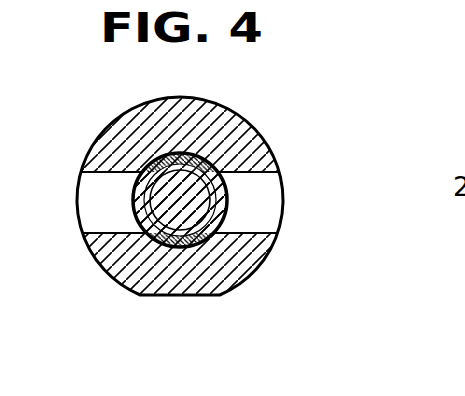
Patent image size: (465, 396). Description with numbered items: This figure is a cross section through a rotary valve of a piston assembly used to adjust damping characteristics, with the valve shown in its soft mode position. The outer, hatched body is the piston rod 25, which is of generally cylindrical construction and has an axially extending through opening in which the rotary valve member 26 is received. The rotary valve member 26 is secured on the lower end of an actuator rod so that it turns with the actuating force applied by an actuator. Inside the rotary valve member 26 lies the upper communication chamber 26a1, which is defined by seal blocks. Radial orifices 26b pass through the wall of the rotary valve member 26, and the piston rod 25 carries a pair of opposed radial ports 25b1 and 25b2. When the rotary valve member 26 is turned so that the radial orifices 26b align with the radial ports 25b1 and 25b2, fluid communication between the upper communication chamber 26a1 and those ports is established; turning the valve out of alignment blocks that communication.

The piston rod 25 is at (272, 130).
The radial port 25b1 is at (267, 202).
The radial port 25b2 is at (90, 190).
The rotary valve member 26 is at (193, 153).
The radial orifices 26b is at (137, 207).
The upper communication chamber 26a1 is at (180, 210).